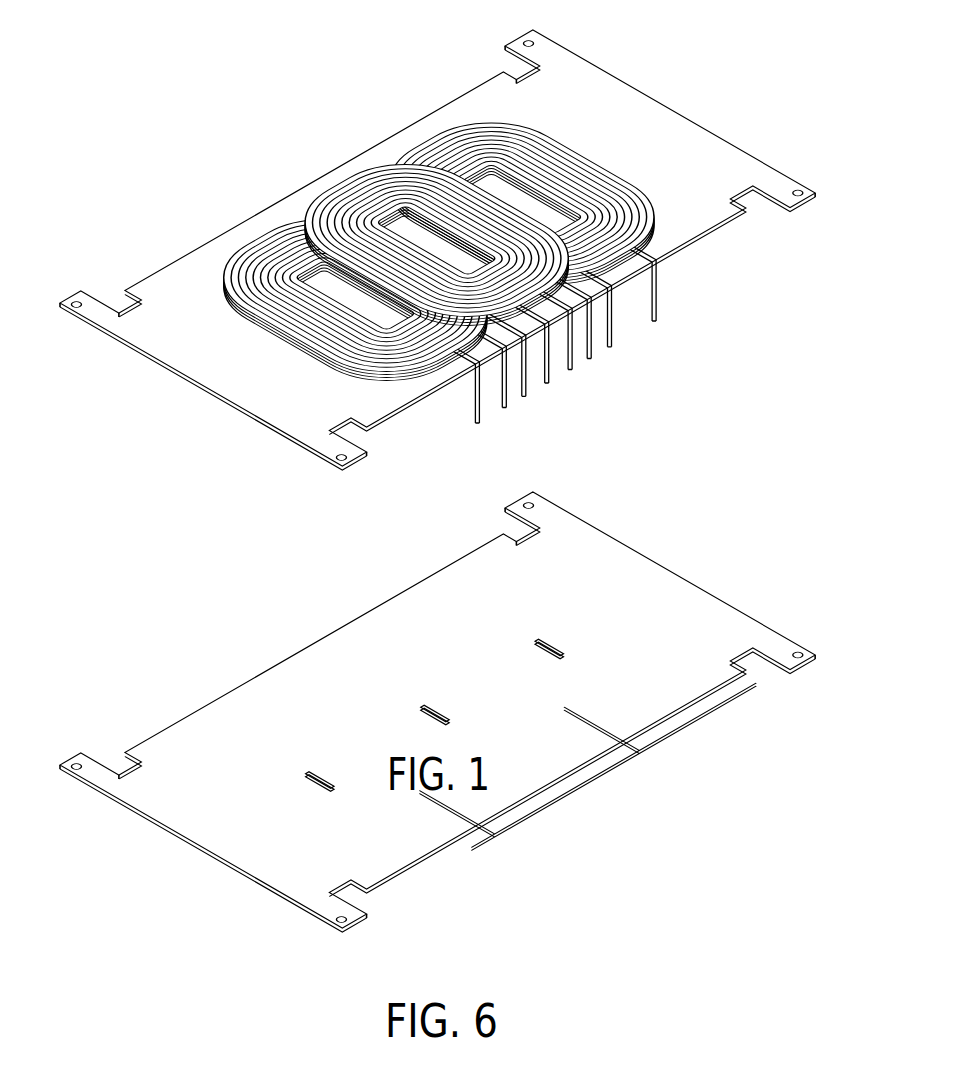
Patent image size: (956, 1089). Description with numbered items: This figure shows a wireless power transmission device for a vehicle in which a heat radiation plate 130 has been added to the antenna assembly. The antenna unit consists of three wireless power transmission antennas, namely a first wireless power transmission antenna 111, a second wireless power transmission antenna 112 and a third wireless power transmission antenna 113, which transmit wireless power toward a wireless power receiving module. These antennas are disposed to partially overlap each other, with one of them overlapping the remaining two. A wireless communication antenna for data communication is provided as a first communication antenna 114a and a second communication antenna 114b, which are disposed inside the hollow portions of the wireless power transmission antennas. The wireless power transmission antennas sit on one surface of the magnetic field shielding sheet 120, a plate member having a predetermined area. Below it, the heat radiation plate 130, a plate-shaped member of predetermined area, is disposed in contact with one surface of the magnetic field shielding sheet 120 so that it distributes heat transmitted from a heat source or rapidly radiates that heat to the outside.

The first wireless power transmission antenna 111 is at (268, 245).
The second wireless power transmission antenna 112 is at (463, 133).
The third wireless power transmission antenna 113 is at (372, 200).
The first communication antenna 114a is at (380, 333).
The second communication antenna 114b is at (593, 210).
The magnetic field shielding sheet 120 is at (678, 108).
The heat radiation plate 130 is at (640, 552).